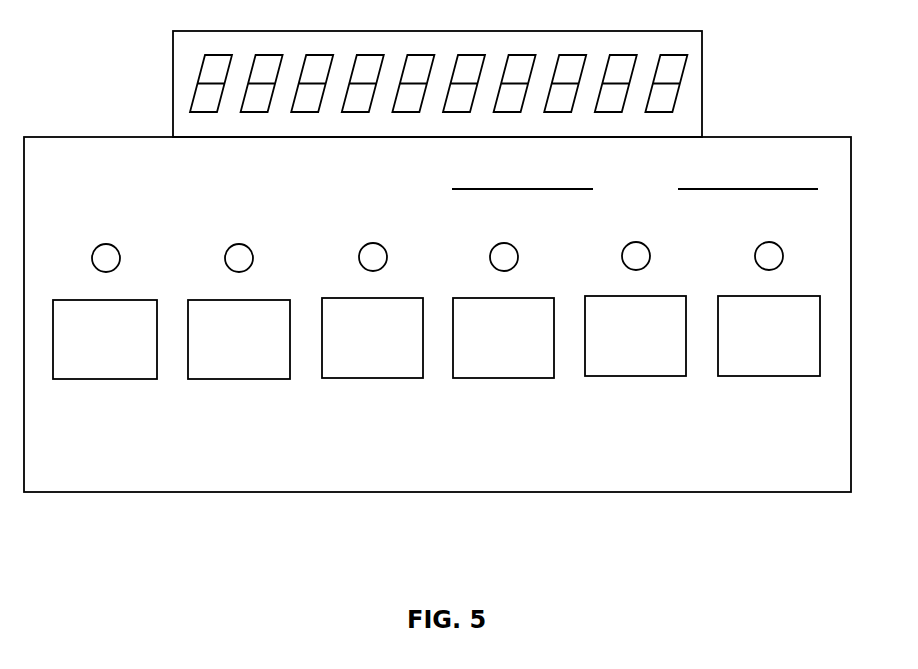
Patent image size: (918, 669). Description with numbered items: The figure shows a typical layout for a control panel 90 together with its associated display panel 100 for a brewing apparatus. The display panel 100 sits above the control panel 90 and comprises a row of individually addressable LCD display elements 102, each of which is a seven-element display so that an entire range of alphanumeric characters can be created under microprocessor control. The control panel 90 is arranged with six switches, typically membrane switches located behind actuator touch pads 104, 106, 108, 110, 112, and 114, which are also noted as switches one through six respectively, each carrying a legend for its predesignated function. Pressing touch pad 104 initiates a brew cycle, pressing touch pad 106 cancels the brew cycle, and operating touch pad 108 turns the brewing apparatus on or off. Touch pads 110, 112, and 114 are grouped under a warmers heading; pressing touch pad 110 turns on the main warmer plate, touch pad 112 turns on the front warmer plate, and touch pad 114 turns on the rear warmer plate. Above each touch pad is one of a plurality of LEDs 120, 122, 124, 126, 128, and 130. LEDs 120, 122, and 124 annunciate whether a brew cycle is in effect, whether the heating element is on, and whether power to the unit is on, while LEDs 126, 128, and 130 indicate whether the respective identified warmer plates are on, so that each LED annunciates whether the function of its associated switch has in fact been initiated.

The control panel 90 is at (538, 514).
The display panel 100 is at (695, 98).
The LCD display elements 102 is at (313, 55).
The actuator touch pad 104 is at (90, 299).
The actuator touch pad 106 is at (225, 299).
The actuator touch pad 108 is at (356, 297).
The actuator touch pad 110 is at (489, 297).
The actuator touch pad 112 is at (620, 295).
The actuator touch pad 114 is at (753, 295).
The LED 120 is at (97, 246).
The LED 122 is at (230, 246).
The LED 124 is at (364, 245).
The LED 126 is at (495, 245).
The LED 128 is at (627, 244).
The LED 130 is at (760, 244).